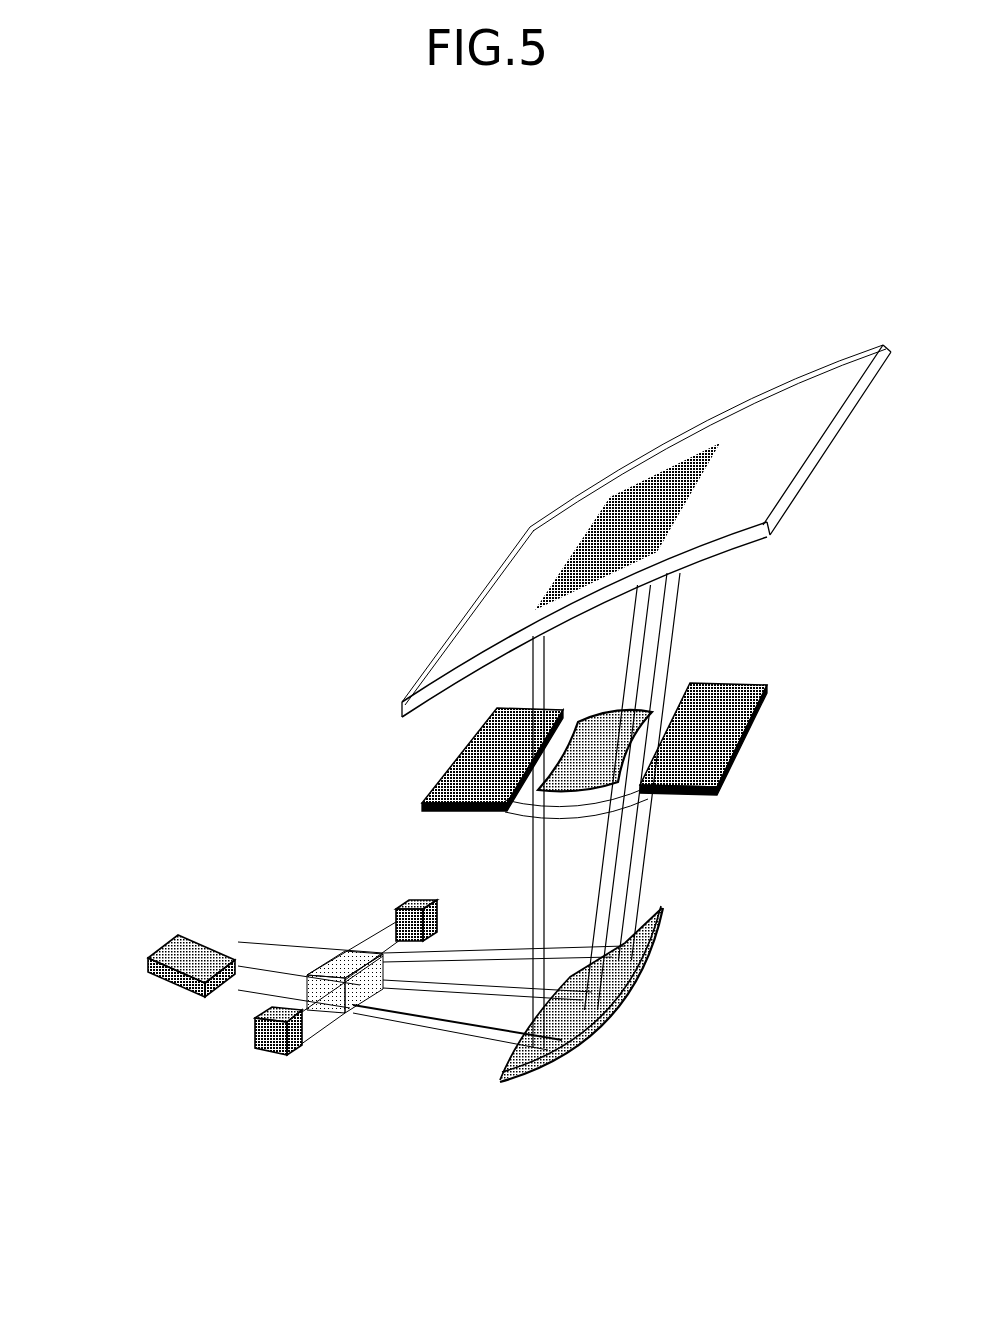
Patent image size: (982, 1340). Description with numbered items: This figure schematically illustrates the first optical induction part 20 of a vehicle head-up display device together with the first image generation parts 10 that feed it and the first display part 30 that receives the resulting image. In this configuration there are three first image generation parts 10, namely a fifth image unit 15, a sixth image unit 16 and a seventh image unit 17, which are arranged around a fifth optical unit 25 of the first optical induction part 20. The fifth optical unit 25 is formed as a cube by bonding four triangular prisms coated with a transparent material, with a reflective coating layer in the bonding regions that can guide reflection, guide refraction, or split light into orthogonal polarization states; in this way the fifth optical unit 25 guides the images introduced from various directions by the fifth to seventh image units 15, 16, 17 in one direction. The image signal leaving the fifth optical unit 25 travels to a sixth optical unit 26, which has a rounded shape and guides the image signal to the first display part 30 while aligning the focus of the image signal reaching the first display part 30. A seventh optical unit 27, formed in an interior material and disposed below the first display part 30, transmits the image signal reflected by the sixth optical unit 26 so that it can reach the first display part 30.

The first image generation parts 10 is at (88, 812).
The fifth image unit 15 is at (398, 905).
The sixth image unit 16 is at (254, 1030).
The seventh image unit 17 is at (172, 939).
The first optical induction part 20 is at (618, 1193).
The fifth optical unit 25 is at (346, 1024).
The sixth optical unit 26 is at (552, 1062).
The seventh optical unit 27 is at (617, 790).
The first display part 30 is at (647, 517).